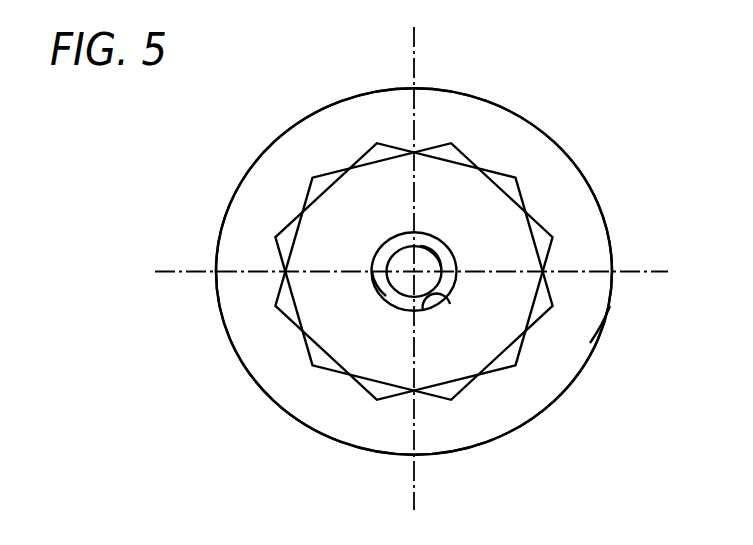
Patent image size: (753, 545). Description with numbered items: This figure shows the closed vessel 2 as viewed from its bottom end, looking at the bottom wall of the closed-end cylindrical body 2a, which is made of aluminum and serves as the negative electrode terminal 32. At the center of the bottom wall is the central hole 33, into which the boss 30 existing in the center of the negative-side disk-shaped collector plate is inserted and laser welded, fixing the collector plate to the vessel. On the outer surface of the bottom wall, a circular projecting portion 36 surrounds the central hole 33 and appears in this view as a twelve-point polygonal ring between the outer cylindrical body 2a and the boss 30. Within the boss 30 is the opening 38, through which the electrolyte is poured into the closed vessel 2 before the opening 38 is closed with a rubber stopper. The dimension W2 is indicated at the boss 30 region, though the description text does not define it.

The closed vessel 2 is at (612, 131).
The closed-end cylindrical body 2a is at (610, 306).
The boss 30 is at (388, 293).
The negative electrode terminal 32 is at (485, 118).
The central hole 33 is at (425, 310).
The circular projecting portion 36 is at (320, 210).
The opening 38 is at (444, 267).
The width W2 is at (387, 293).